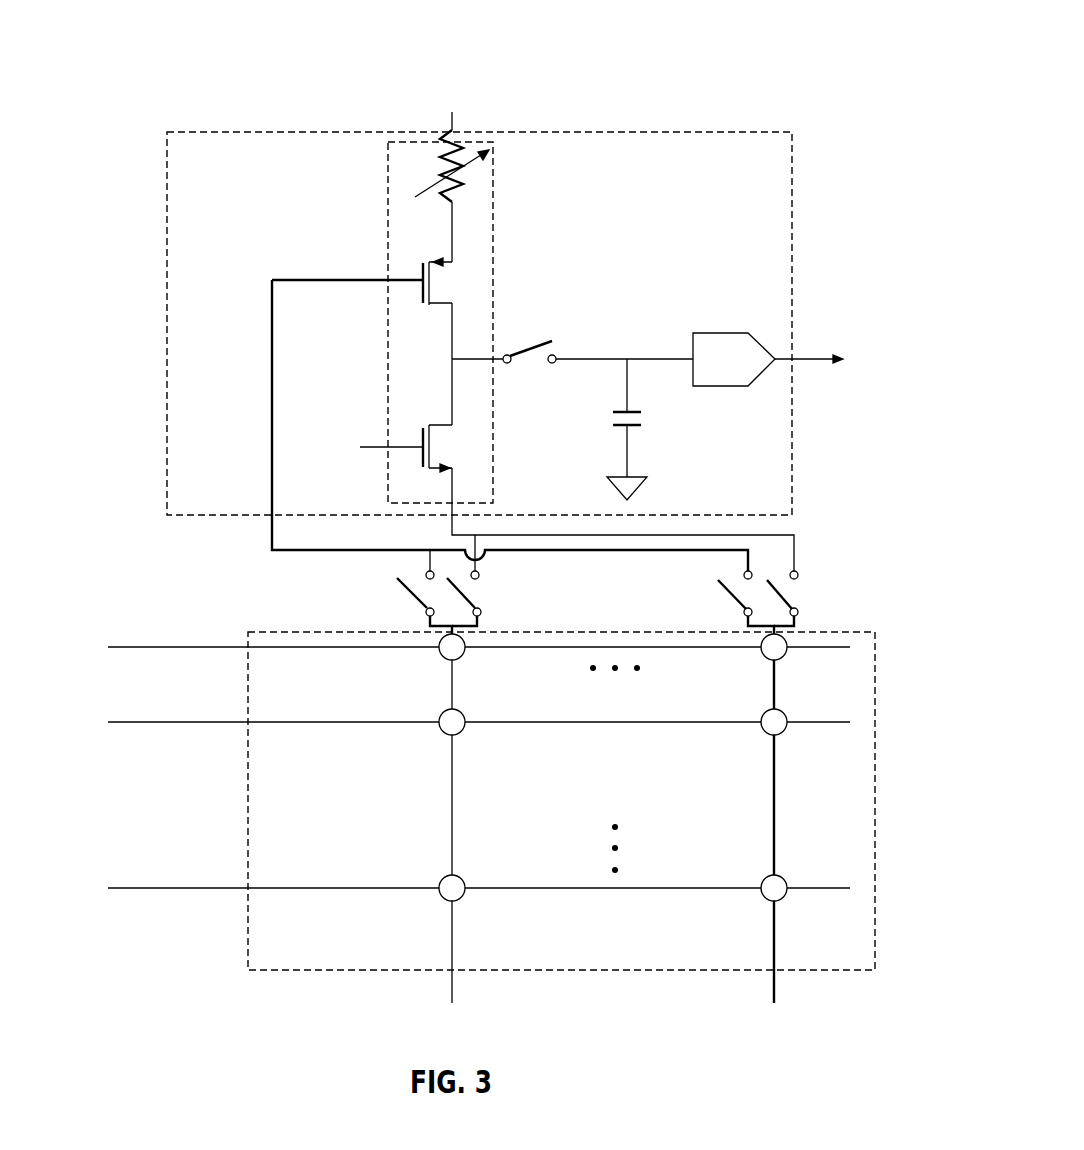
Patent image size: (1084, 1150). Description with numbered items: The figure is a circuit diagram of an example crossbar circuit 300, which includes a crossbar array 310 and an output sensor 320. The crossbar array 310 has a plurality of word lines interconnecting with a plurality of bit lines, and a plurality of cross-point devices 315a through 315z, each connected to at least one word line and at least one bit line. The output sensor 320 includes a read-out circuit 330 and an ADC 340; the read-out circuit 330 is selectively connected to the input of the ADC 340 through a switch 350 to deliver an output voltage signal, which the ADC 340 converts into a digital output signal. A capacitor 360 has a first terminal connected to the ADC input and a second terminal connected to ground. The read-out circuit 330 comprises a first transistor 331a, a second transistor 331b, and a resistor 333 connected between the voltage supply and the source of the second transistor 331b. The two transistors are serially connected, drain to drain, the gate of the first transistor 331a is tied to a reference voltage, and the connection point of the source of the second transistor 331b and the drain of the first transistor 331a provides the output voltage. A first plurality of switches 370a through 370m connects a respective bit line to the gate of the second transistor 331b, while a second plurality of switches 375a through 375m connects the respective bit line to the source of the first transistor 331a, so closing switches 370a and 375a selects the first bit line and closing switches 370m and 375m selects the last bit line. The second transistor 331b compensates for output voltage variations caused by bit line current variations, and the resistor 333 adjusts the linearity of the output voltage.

The crossbar circuit 300 is at (197, 59).
The crossbar array 310 is at (876, 652).
The cross-point device 315a is at (465, 640).
The cross-point device 315z is at (780, 876).
The output sensor 320 is at (795, 182).
The read-out circuit 330 is at (495, 212).
The first transistor 331a is at (438, 444).
The second transistor 331b is at (418, 277).
The resistor 333 is at (447, 157).
The ADC 340 is at (715, 333).
The switch 350 is at (542, 342).
The capacitor 360 is at (633, 427).
The switch 370a is at (426, 611).
The switch 370m is at (744, 612).
The switch 375a is at (481, 605).
The switch 375m is at (797, 612).